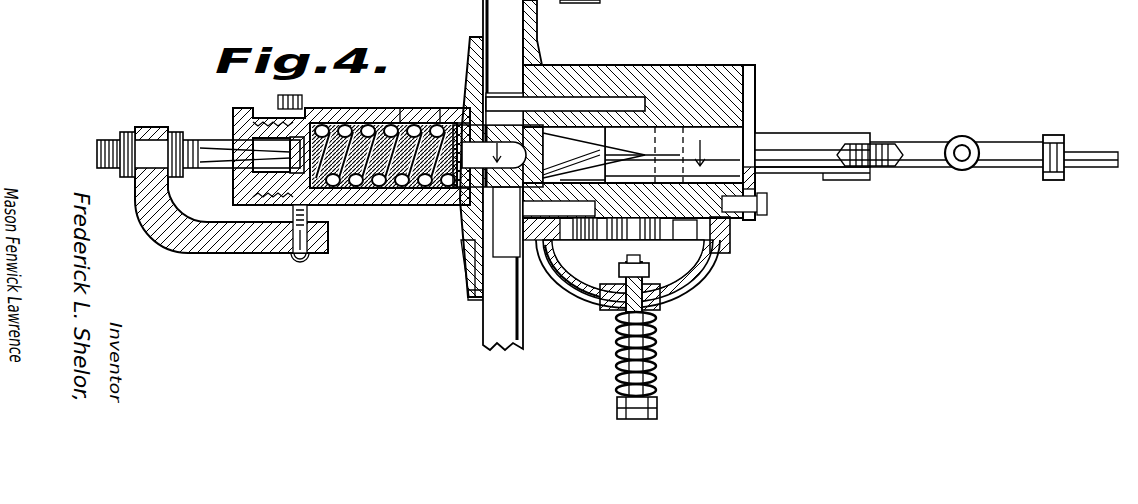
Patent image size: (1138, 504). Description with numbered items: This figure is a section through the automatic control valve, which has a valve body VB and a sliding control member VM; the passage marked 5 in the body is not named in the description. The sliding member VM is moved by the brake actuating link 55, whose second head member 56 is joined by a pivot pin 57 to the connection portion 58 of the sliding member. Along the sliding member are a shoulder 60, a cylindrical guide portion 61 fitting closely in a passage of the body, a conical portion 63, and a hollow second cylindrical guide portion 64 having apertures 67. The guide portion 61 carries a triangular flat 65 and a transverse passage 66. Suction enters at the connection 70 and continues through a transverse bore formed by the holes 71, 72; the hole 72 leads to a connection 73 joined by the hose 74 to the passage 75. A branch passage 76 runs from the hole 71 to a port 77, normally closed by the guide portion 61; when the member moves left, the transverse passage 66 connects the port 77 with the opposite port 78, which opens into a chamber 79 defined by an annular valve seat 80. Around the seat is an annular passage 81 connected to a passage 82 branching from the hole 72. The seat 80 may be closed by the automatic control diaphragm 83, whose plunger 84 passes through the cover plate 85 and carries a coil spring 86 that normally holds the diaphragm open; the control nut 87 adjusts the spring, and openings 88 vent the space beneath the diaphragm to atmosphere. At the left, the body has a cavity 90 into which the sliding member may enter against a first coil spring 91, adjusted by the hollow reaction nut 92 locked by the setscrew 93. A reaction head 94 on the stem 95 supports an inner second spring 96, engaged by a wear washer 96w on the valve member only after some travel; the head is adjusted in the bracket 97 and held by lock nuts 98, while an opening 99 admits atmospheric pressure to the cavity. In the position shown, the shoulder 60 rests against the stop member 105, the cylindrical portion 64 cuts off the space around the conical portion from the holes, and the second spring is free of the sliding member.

The fuel passage 5 is at (602, 155).
The brake actuating link 55 is at (1077, 162).
The second head member 56 is at (1000, 150).
The pivot pin 57 is at (962, 146).
The connection portion 58 is at (828, 137).
The shoulder 60 is at (758, 152).
The guide portion 61 is at (747, 97).
The conical portion 63 is at (574, 155).
The second cylindrical guide portion 64 is at (470, 205).
The flat 65 is at (594, 153).
The transverse passage 66 is at (752, 67).
The apertures 67 is at (506, 222).
The connection 70 is at (537, 43).
The hole 71 is at (498, 140).
The hole 72 is at (465, 250).
The connection 73 is at (470, 294).
The hose 74 is at (487, 333).
The passage 75 is at (580, 5).
The branch passage 76 is at (570, 97).
The port 77 is at (640, 115).
The port 78 is at (582, 174).
The chamber 79 is at (628, 266).
The annular valve seat 80 is at (705, 262).
The annular passage 81 is at (767, 210).
The passage 82 is at (633, 201).
The automatic control diaphragm 83 is at (700, 277).
The plunger 84 is at (628, 298).
The cover plate 85 is at (690, 295).
The coil spring 86 is at (657, 350).
The control nut 87 is at (617, 412).
The openings 88 is at (588, 285).
The cavity 90 is at (400, 130).
The first coil spring 91 is at (418, 118).
The hollow reaction nut 92 is at (233, 112).
The setscrew 93 is at (280, 100).
The reaction head 94 is at (290, 158).
The stem 95 is at (197, 140).
The second spring 96 is at (345, 130).
The wear washer 96w is at (462, 120).
The bracket 97 is at (181, 238).
The lock nuts 98 is at (165, 128).
The opening 99 is at (347, 205).
The stop member 105 is at (758, 178).
The valve body VB is at (722, 68).
The sliding control member VM is at (745, 125).